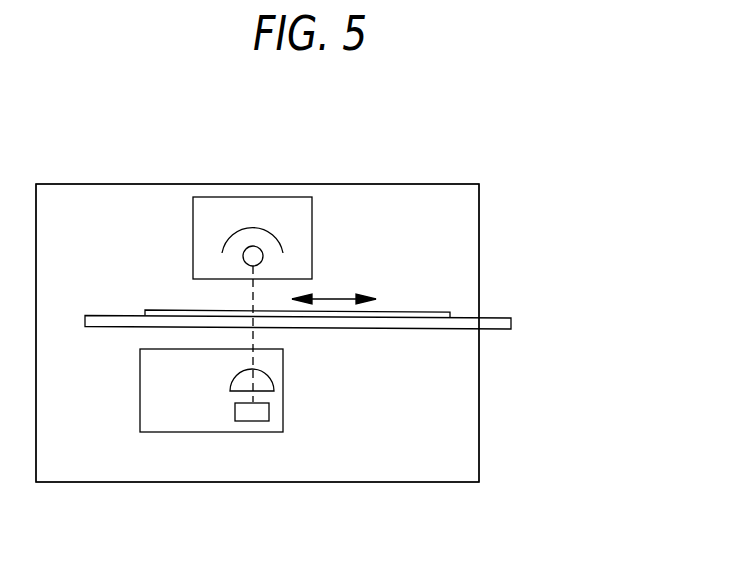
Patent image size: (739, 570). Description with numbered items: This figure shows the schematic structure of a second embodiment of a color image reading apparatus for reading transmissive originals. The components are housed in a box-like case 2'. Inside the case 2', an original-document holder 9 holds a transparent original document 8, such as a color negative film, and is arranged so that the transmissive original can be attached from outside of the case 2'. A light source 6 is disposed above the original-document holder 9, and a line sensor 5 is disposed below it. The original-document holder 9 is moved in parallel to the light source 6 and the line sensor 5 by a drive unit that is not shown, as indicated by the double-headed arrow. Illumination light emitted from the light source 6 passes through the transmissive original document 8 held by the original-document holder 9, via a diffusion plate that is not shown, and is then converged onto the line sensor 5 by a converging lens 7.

The box-like case 2' is at (301, 333).
The light source 6 is at (243, 257).
The transparent original document 8 is at (418, 310).
The original-document holder 9 is at (511, 324).
The converging lens 7 is at (274, 383).
The line sensor 5 is at (269, 412).